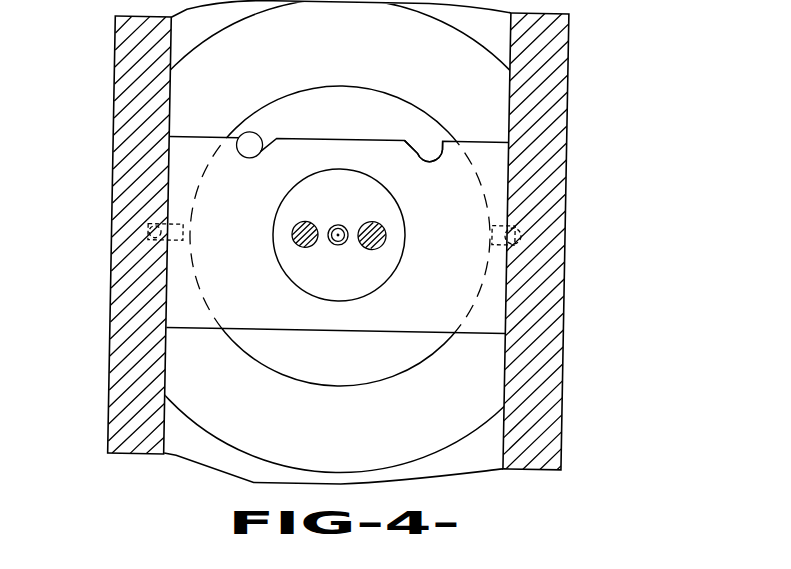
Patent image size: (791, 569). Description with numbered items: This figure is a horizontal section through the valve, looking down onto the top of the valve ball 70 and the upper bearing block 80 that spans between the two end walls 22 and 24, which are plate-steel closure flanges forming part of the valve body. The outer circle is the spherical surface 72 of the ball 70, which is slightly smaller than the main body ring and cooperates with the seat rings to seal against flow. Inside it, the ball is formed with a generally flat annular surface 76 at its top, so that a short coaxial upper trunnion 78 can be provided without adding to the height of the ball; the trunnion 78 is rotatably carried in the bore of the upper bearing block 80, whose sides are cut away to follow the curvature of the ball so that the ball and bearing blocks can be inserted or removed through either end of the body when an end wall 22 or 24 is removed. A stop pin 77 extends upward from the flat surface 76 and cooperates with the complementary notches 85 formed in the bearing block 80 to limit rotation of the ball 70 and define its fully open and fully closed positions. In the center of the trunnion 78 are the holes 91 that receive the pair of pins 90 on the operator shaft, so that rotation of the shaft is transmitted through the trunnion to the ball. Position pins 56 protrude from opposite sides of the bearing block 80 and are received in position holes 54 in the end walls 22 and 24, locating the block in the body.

The end wall 22 is at (130, 265).
The end wall 24 is at (549, 199).
The valve ball 70 is at (419, 44).
The spherical surface 72 is at (331, 53).
The flat annular surface 76 is at (326, 123).
The stop pin 77 is at (248, 138).
The notch 85 is at (427, 160).
The upper bearing block 80 is at (221, 238).
The upper trunnion 78 is at (374, 279).
The pin 90 is at (385, 242).
The hole 91 is at (380, 224).
The position pin 56 is at (492, 221).
The position hole 54 is at (483, 268).